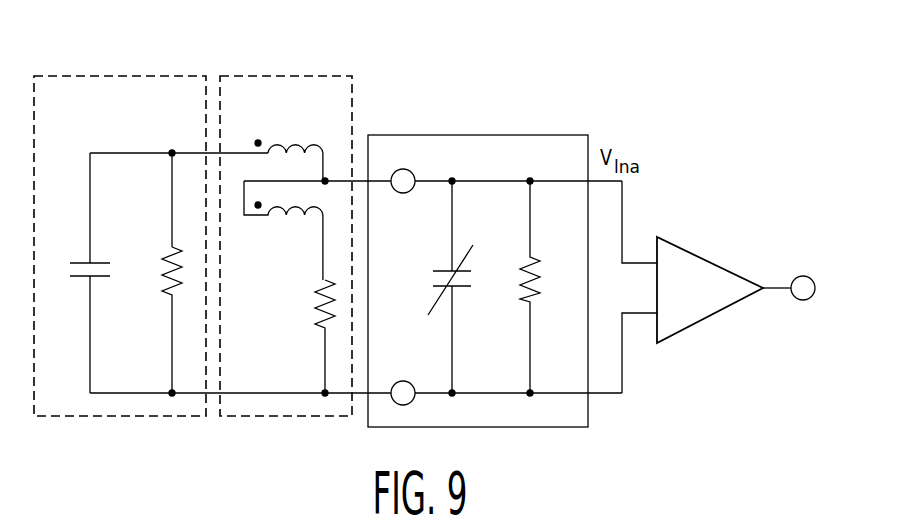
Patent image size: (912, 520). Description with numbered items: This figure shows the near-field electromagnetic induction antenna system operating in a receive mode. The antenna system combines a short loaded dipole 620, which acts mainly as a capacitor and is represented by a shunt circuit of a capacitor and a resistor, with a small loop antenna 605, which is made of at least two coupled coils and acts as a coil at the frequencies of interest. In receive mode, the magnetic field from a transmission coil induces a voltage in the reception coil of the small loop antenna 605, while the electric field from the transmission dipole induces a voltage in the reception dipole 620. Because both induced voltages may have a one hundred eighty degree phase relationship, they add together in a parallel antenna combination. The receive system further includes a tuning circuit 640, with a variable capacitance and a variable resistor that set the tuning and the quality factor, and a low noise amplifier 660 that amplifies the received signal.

The short loaded dipole 620 is at (88, 76).
The small loop antenna 605 is at (303, 76).
The tuning circuit 640 is at (522, 135).
The LNA 660 is at (712, 262).